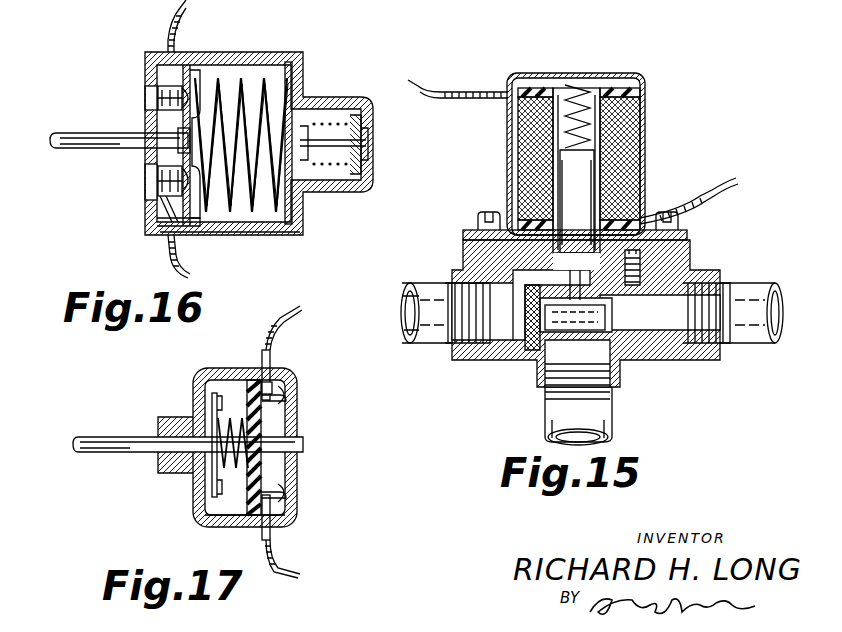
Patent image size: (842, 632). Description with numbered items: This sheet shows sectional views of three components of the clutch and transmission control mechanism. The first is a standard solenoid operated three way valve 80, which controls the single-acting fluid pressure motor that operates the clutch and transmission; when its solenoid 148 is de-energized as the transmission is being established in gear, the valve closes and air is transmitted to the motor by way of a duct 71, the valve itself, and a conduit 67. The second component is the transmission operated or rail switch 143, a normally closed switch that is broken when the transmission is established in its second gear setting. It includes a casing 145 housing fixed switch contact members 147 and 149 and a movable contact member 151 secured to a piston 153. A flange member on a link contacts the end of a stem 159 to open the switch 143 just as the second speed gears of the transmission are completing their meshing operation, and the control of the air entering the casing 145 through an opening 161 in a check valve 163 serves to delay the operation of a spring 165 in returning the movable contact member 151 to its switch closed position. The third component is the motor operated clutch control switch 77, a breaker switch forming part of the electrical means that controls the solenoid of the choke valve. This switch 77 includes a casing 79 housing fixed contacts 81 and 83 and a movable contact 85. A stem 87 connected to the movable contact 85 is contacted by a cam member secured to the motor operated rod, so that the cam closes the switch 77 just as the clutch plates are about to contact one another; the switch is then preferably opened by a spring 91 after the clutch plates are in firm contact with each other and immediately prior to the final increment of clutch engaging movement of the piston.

In FIG. 16, the transmission operated switch 143 is at (138, 115).
In FIG. 16, the fixed switch contact member 147 is at (158, 92).
In FIG. 16, the fixed switch contact member 149 is at (152, 202).
In FIG. 16, the stem 159 is at (132, 142).
In FIG. 16, the movable contact member 151 is at (190, 218).
In FIG. 16, the spring 165 is at (250, 84).
In FIG. 16, the piston 153 is at (203, 90).
In FIG. 16, the opening 161 is at (376, 118).
In FIG. 16, the check valve 163 is at (372, 187).
In FIG. 16, the casing 145 is at (282, 232).
In FIG. 17, the motor operated clutch control switch 77 is at (197, 372).
In FIG. 17, the fixed contact 81 is at (262, 392).
In FIG. 17, the fixed contact 83 is at (260, 528).
In FIG. 17, the movable contact 85 is at (214, 414).
In FIG. 17, the stem 87 is at (115, 452).
In FIG. 17, the spring 91 is at (226, 456).
In FIG. 15, the spring 91 is at (600, 442).
In FIG. 17, the casing 79 is at (205, 520).
In FIG. 15, the solenoid 148 is at (632, 142).
In FIG. 15, the solenoid operated three way valve 80 is at (555, 325).
In FIG. 15, the duct 71 is at (402, 313).
In FIG. 15, the conduit 67 is at (780, 335).